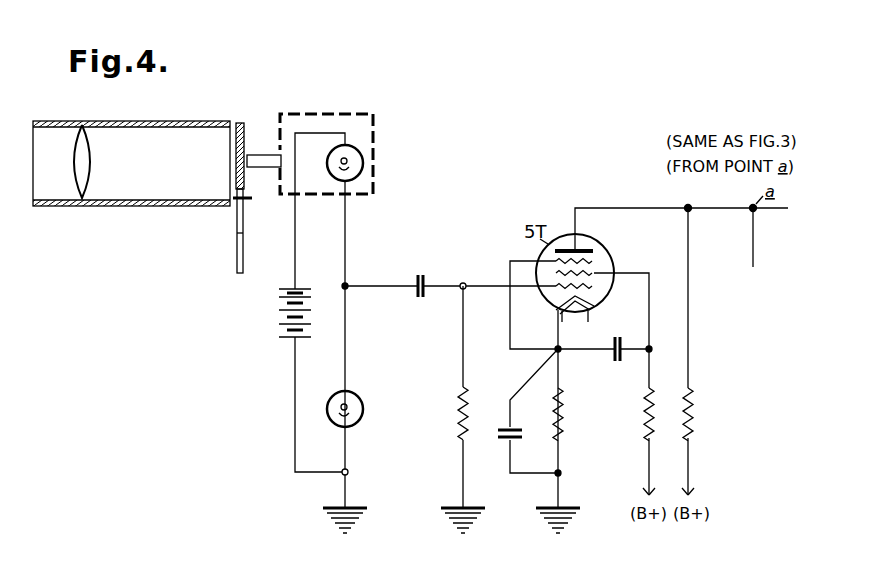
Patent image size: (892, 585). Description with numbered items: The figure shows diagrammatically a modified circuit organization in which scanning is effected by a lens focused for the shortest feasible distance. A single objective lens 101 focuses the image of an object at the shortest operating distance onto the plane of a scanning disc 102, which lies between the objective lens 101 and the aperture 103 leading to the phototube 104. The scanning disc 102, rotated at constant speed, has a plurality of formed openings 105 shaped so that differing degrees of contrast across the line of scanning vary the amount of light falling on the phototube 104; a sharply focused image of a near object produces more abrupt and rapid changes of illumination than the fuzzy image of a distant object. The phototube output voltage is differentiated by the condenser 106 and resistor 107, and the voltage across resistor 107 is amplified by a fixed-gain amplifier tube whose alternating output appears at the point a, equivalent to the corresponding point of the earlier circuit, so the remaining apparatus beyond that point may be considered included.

The objective lens 101 is at (73, 174).
The scanning disc 102 is at (237, 261).
The aperture 103 is at (256, 161).
The phototube 104 is at (363, 158).
The formed openings 105 is at (243, 164).
The condenser 106 is at (432, 274).
The resistor 107 is at (460, 409).